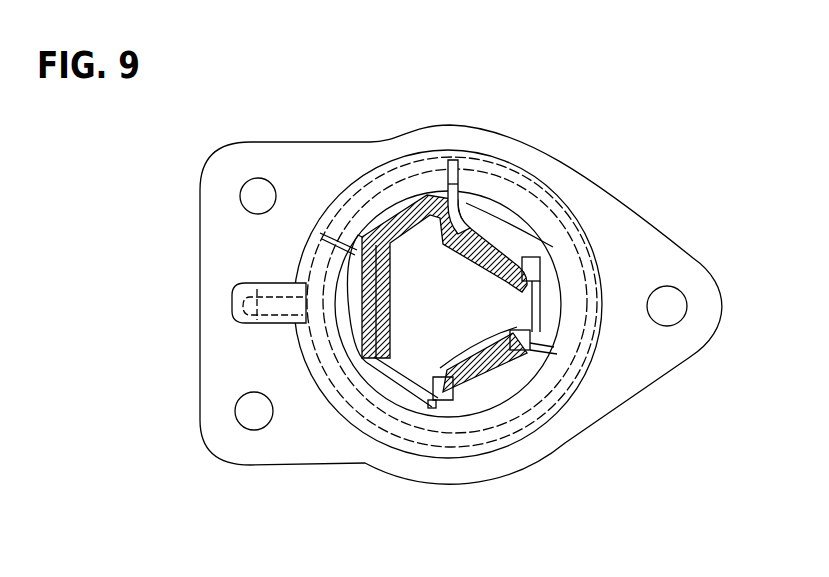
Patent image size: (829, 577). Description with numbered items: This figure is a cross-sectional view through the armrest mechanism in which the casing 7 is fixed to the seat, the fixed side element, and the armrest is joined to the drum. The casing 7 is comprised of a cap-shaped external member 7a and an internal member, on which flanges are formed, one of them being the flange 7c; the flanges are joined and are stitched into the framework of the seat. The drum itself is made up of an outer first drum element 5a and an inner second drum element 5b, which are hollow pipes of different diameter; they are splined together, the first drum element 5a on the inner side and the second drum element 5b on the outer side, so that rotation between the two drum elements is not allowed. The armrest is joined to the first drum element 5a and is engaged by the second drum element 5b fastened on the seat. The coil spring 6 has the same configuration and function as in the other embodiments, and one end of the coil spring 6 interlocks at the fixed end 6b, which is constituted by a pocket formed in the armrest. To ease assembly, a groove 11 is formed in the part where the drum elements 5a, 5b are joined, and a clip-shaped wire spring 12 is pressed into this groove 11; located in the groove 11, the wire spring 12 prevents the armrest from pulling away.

The first drum element 5a is at (447, 247).
The second drum element 5b is at (463, 360).
The coil spring 6 is at (570, 257).
The fixed end 6b is at (258, 322).
The casing 7 is at (387, 457).
The external member 7a is at (480, 447).
The flange 7c is at (687, 262).
The groove 11 is at (533, 237).
The wire spring 12 is at (490, 230).